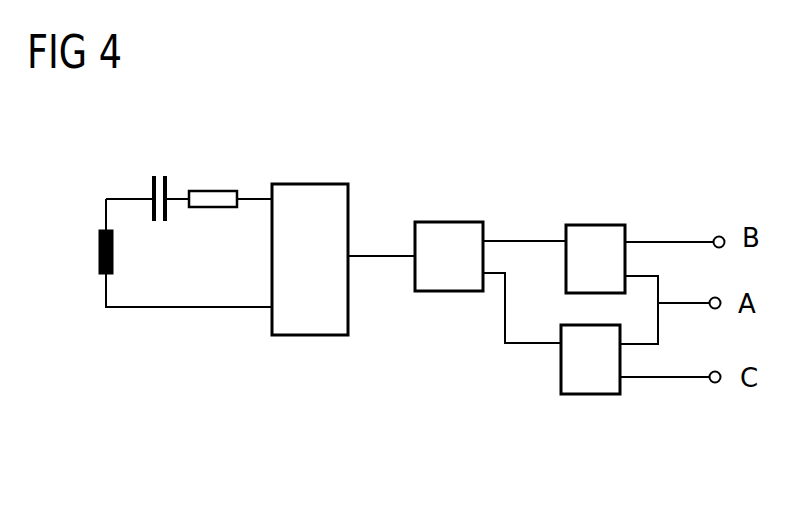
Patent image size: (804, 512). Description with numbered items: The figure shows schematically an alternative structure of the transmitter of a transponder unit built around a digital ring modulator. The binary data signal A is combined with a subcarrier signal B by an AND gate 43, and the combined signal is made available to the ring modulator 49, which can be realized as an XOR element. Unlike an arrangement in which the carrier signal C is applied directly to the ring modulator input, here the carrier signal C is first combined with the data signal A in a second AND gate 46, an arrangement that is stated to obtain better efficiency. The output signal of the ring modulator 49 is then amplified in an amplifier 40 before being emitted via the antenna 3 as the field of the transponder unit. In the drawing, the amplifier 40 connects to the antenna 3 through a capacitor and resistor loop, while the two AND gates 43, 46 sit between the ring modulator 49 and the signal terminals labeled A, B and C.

The antenna 3 is at (113, 250).
The amplifier 40 is at (298, 184).
The ring modulator 49 is at (455, 222).
The AND gate 43 is at (583, 225).
The AND gate 46 is at (590, 394).